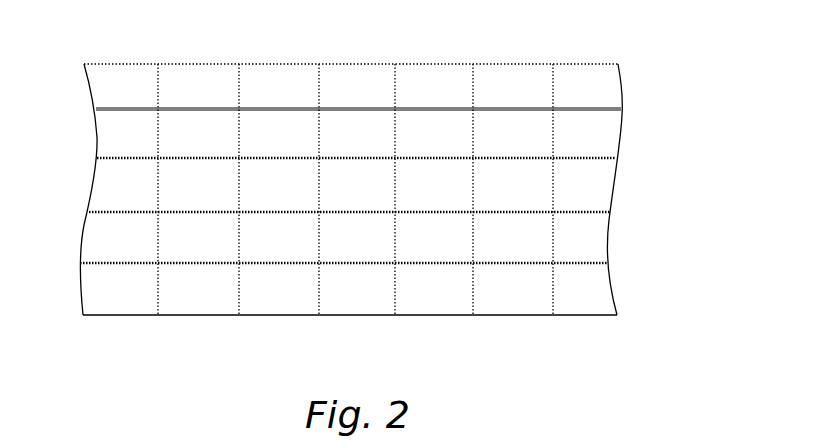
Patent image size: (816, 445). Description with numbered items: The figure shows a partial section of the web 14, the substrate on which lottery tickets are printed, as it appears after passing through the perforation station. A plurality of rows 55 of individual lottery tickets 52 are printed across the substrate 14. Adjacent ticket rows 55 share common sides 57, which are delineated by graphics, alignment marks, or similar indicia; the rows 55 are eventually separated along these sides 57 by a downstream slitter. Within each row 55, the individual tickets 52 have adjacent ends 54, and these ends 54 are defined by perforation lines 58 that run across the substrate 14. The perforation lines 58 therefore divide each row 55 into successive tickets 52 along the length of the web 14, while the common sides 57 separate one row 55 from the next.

The web 14 is at (622, 97).
The lottery ticket 52 is at (215, 190).
The adjacent ends 54 is at (318, 271).
The row 55 is at (112, 137).
The common side 57 is at (583, 205).
The perforation line 58 is at (245, 96).